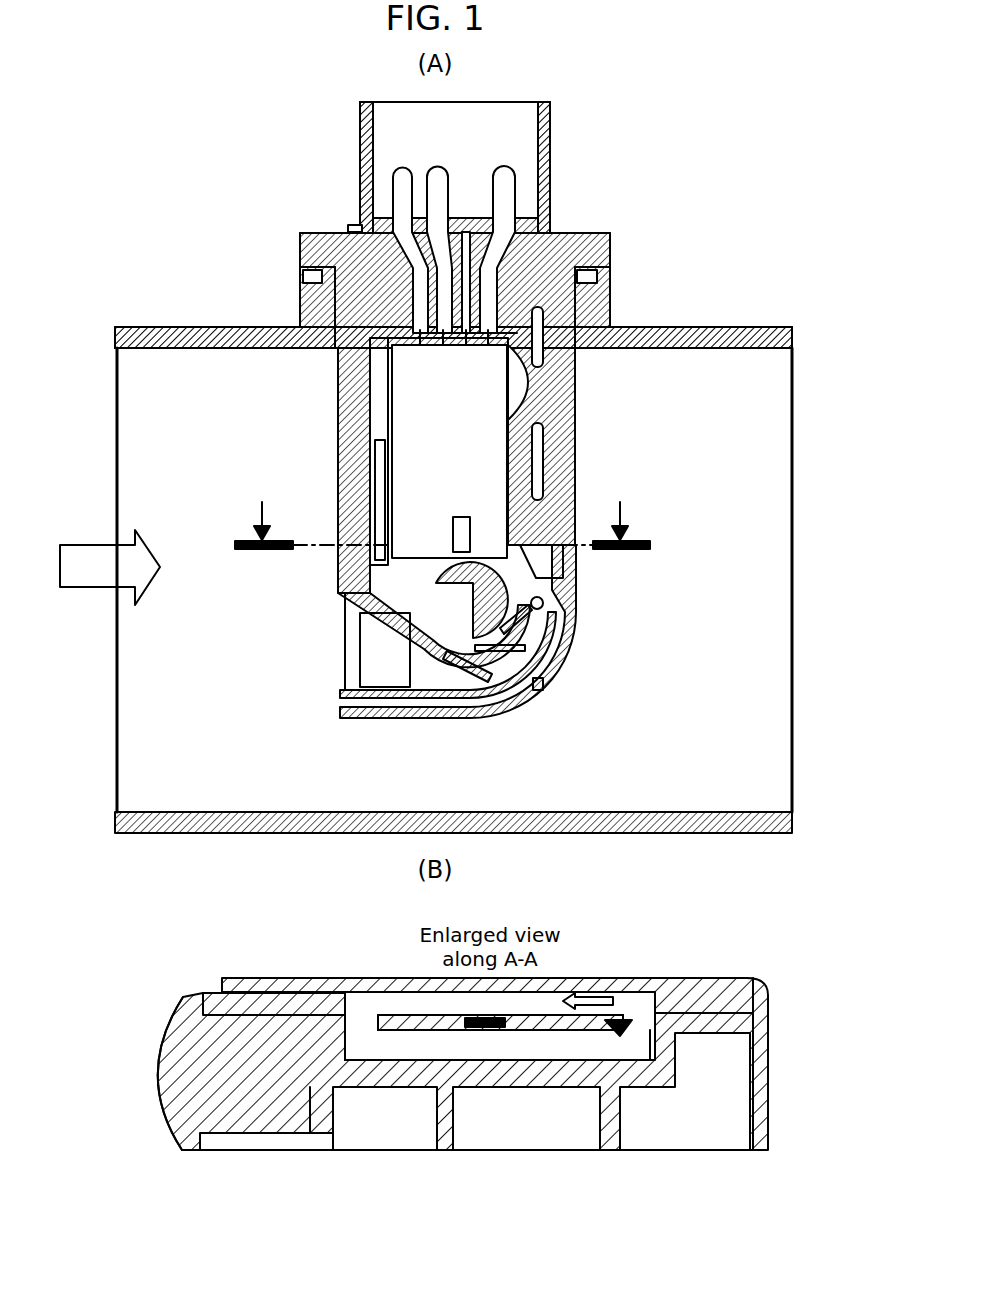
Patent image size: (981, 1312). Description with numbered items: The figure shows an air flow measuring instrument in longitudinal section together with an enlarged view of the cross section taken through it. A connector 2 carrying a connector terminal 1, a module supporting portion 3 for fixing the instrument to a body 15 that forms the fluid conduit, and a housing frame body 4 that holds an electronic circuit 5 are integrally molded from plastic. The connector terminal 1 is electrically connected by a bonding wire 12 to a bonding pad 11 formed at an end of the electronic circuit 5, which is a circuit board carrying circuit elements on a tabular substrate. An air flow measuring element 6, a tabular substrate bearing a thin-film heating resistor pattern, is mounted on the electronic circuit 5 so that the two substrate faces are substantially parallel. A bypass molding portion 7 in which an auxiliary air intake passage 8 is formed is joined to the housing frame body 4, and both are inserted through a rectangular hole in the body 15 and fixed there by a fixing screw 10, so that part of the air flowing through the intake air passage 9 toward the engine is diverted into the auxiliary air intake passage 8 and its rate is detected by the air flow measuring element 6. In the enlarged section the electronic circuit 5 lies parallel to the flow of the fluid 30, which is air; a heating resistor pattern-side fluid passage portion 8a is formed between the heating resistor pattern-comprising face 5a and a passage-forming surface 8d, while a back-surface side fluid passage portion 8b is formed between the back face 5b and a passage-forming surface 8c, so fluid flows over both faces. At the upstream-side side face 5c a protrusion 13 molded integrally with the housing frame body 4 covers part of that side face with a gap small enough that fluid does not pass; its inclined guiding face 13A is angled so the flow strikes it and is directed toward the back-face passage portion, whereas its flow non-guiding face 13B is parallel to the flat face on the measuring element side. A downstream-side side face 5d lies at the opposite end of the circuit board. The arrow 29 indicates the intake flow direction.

The connector terminal 1 is at (513, 195).
The connector 2 is at (362, 132).
The module supporting portion 3 is at (612, 242).
The housing frame body 4 is at (352, 375).
The electronic circuit 5 is at (457, 435).
The heating resistor pattern-comprising face 5a is at (495, 1032).
The back face 5b is at (420, 1015).
The upstream-side side face 5c is at (605, 1028).
The downstream-side side face 5d is at (378, 1022).
The air flow measuring element 6 is at (458, 530).
The bypass molding portion 7 is at (467, 718).
The auxiliary air intake passage 8 is at (420, 663).
The heating resistor pattern-side fluid passage portion 8a is at (530, 1050).
The back-surface side fluid passage portion 8b is at (525, 1005).
The passage-forming surface 8c is at (400, 1003).
The passage-forming surface 8d is at (350, 1062).
The intake air passage 9 is at (212, 627).
The fixing screw 10 is at (350, 225).
The bonding pad 11 is at (500, 368).
The bonding wire 12 is at (610, 312).
The protrusion 13 is at (573, 592).
The guiding face 13A is at (625, 1033).
The flow non-guiding face 13B is at (640, 1062).
The body 15 is at (177, 328).
The air flow direction 29 is at (95, 560).
The fluid 30 is at (600, 1010).